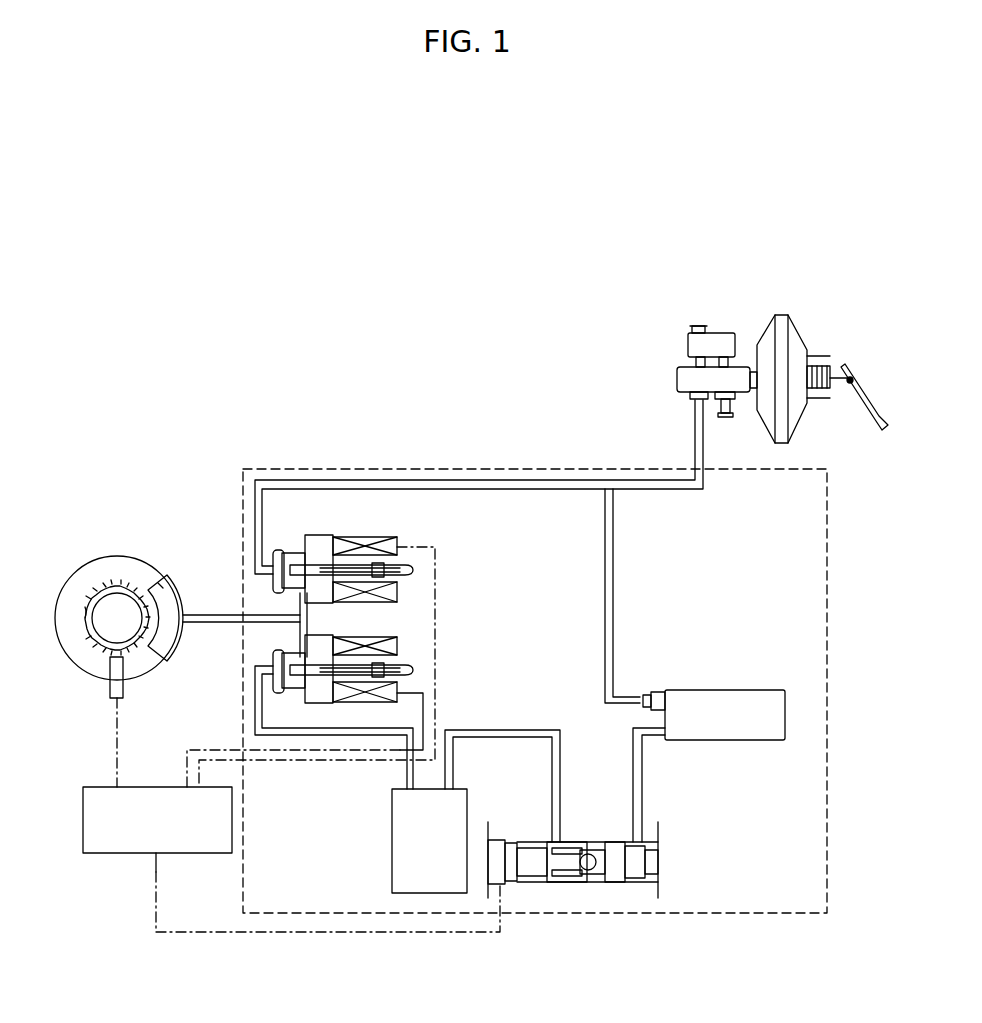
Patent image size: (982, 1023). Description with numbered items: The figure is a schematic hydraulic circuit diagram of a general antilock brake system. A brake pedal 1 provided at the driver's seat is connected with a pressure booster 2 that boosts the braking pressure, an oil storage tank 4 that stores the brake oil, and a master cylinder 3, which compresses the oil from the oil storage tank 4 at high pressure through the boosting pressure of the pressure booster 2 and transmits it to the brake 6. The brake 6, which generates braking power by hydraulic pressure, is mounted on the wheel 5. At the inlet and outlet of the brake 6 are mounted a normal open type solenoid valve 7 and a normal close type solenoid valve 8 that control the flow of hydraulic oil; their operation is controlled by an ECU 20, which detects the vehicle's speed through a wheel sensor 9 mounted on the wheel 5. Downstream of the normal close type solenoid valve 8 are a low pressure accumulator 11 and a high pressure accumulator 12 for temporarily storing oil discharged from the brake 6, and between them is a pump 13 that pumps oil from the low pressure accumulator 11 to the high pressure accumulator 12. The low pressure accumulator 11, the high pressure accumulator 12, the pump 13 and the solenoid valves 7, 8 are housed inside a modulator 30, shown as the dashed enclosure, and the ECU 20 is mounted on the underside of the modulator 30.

The brake pedal 1 is at (855, 383).
The pressure booster 2 is at (786, 346).
The master cylinder 3 is at (690, 378).
The oil storage tank 4 is at (716, 341).
The wheel 5 is at (112, 566).
The brake 6 is at (153, 582).
The normal open type solenoid valve 7 is at (393, 547).
The normal close type solenoid valve 8 is at (393, 648).
The wheel sensor 9 is at (110, 693).
The low pressure accumulator 11 is at (392, 827).
The high pressure accumulator 12 is at (715, 698).
The pump 13 is at (602, 845).
The ECU 20 is at (83, 822).
The modulator 30 is at (722, 914).